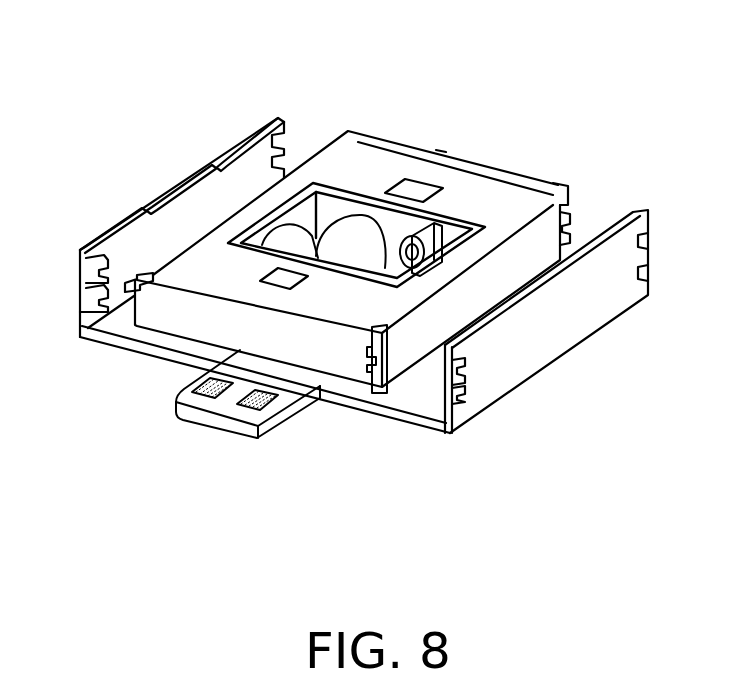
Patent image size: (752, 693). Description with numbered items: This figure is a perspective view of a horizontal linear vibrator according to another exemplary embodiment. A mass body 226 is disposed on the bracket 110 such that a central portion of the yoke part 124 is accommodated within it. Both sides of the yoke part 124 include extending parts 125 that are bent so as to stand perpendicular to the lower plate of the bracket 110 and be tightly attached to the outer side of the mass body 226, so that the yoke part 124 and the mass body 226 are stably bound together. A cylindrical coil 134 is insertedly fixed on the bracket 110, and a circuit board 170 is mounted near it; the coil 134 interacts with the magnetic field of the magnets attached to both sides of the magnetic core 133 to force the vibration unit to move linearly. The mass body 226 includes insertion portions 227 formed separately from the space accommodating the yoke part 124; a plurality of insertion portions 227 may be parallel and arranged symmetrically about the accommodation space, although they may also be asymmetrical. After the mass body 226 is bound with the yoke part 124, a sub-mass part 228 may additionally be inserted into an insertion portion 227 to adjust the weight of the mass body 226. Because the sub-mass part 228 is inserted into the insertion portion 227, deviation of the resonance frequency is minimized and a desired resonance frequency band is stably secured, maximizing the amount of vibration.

The bracket 110 is at (557, 356).
The yoke part 124 is at (322, 195).
The extending part 125 is at (353, 358).
The magnetic core 133 is at (297, 236).
The cylindrical coil 134 is at (358, 237).
The circuit board 170 is at (225, 402).
The mass body 226 is at (517, 190).
The insertion portion 227 is at (442, 152).
The sub-mass part 228 is at (295, 270).